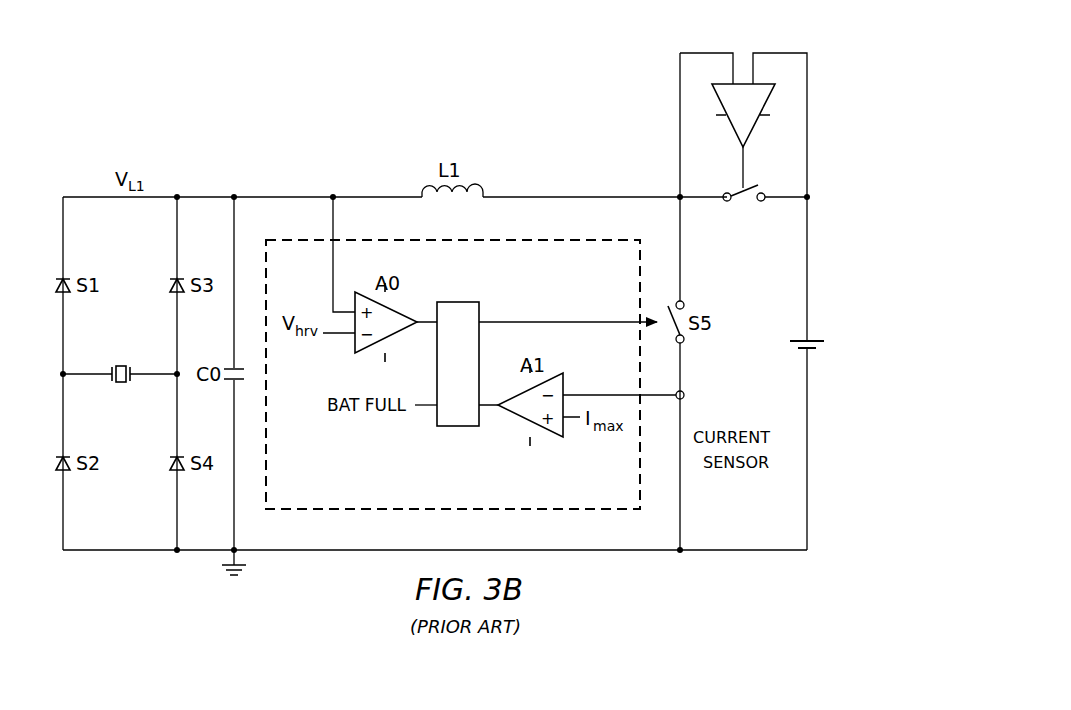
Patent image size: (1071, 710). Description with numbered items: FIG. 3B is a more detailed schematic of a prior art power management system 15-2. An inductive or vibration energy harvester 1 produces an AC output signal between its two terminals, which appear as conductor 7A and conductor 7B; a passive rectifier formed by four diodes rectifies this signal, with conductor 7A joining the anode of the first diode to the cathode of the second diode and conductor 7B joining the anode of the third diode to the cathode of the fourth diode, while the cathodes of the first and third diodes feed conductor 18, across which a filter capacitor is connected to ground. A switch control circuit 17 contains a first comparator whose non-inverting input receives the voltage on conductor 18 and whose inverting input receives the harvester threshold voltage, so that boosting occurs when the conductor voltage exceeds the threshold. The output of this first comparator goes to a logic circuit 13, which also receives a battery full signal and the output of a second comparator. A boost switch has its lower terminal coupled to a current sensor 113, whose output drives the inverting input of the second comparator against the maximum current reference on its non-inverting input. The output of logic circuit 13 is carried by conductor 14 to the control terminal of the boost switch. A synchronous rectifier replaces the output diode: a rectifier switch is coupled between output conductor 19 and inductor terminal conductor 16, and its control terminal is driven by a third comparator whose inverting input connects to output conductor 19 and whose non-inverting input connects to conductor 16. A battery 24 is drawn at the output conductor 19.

The inductive energy harvester 1 is at (121, 384).
The conductor 7A is at (66, 371).
The conductor 7B is at (174, 371).
The logic circuit 13 is at (456, 427).
The conductor 14 is at (552, 320).
The power management system 15-2 is at (325, 126).
The conductor 16 is at (600, 195).
The switch control circuit 17 is at (346, 478).
The conductor 18 is at (203, 195).
The output conductor 19 is at (808, 135).
The battery 24 is at (786, 343).
The current sensor 113 is at (685, 396).